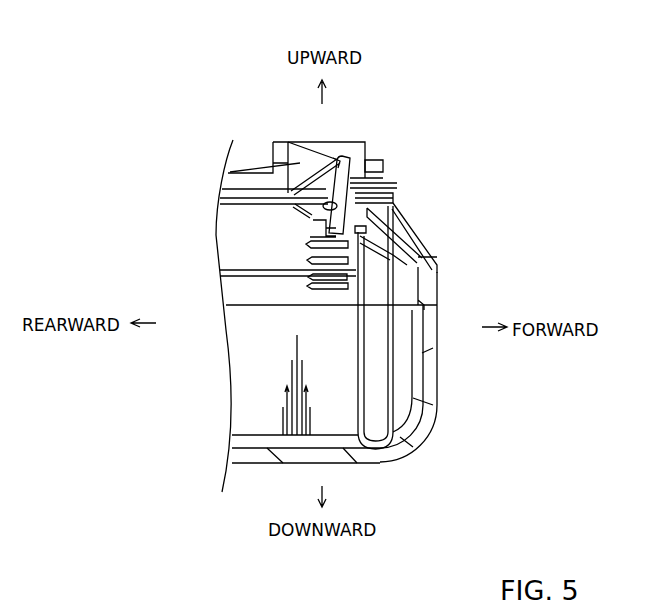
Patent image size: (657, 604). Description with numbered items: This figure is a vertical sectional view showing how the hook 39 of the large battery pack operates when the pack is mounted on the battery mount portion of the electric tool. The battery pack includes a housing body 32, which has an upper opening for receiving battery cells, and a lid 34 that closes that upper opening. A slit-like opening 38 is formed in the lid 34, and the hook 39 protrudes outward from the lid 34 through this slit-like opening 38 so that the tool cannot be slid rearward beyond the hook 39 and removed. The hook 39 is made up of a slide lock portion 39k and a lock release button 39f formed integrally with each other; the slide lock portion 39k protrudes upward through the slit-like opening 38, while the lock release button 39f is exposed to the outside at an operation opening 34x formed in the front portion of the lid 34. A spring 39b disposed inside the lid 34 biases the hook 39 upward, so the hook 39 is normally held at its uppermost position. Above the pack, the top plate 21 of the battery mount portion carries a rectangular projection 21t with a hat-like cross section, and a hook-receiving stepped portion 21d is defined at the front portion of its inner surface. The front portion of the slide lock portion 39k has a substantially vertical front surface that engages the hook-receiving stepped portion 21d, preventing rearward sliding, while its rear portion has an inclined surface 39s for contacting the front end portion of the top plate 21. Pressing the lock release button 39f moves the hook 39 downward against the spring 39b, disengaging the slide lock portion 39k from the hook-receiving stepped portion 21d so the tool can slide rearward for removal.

The top plate 21 is at (266, 133).
The rectangular projection 21t is at (339, 141).
The hook-receiving stepped portion 21d is at (351, 158).
The hook 39 is at (333, 158).
The inclined surface 39s is at (297, 167).
The slide lock portion 39k is at (373, 182).
The lock release button 39f is at (398, 231).
The lid 34 is at (217, 200).
The slit-like opening 38 is at (293, 208).
The spring 39b is at (312, 260).
The operation opening 34x is at (430, 302).
The housing body 32 is at (445, 393).